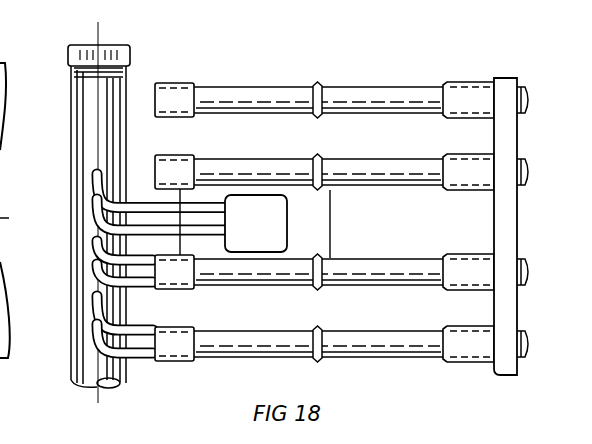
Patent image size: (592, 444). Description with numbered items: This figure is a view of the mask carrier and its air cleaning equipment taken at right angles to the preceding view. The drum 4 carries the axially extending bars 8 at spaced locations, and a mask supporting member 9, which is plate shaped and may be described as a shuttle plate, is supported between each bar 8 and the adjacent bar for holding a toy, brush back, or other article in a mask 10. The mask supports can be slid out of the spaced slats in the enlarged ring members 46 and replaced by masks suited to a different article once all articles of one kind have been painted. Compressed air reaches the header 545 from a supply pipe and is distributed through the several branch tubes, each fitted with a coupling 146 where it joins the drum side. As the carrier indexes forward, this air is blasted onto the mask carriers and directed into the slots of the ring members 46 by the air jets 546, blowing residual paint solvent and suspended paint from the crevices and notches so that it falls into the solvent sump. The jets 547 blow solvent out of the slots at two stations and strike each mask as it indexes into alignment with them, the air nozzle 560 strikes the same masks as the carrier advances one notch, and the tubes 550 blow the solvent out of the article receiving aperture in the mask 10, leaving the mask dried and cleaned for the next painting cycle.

The drum 4 is at (507, 229).
The axially extending bars 8 is at (407, 89).
The mask supporting member 9 is at (318, 233).
The mask 10 is at (275, 219).
The enlarged ring members 46 is at (321, 85).
The coupling 146 is at (466, 83).
The header 545 is at (77, 125).
The air jets 546 is at (158, 258).
The jets 547 is at (90, 321).
The tubes 550 is at (89, 197).
The air nozzle 560 is at (89, 263).